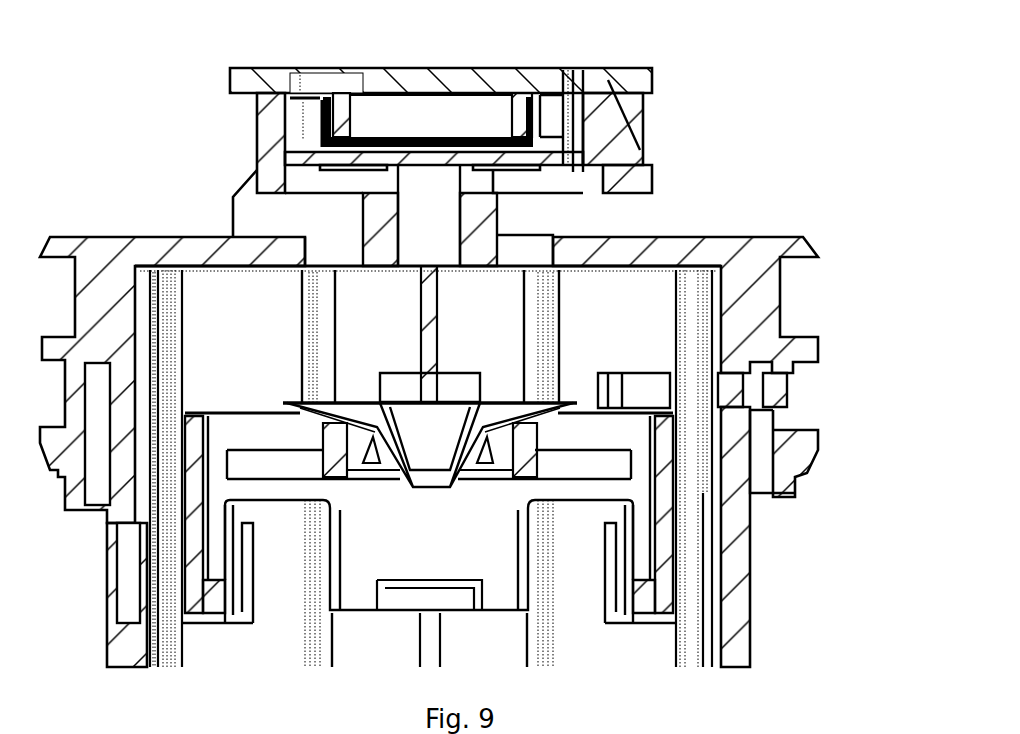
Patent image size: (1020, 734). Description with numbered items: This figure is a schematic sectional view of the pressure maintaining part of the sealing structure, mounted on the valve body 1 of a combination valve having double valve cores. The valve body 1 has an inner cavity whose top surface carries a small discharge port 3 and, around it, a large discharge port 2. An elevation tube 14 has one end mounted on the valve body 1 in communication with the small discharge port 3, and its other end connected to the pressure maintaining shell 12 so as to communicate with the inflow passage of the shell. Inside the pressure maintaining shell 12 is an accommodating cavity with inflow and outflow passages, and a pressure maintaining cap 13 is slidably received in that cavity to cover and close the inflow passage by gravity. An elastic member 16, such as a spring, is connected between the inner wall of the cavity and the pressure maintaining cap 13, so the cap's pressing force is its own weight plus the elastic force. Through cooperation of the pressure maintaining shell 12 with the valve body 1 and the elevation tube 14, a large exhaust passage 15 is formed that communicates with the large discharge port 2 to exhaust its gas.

The valve body 1 is at (755, 315).
The large discharge port 2 is at (530, 245).
The small discharge port 3 is at (440, 245).
The pressure maintaining shell 12 is at (253, 155).
The pressure maintaining cap 13 is at (377, 140).
The elevation tube 14 is at (380, 215).
The large exhaust passage 15 is at (330, 130).
The elastic member 16 is at (560, 120).